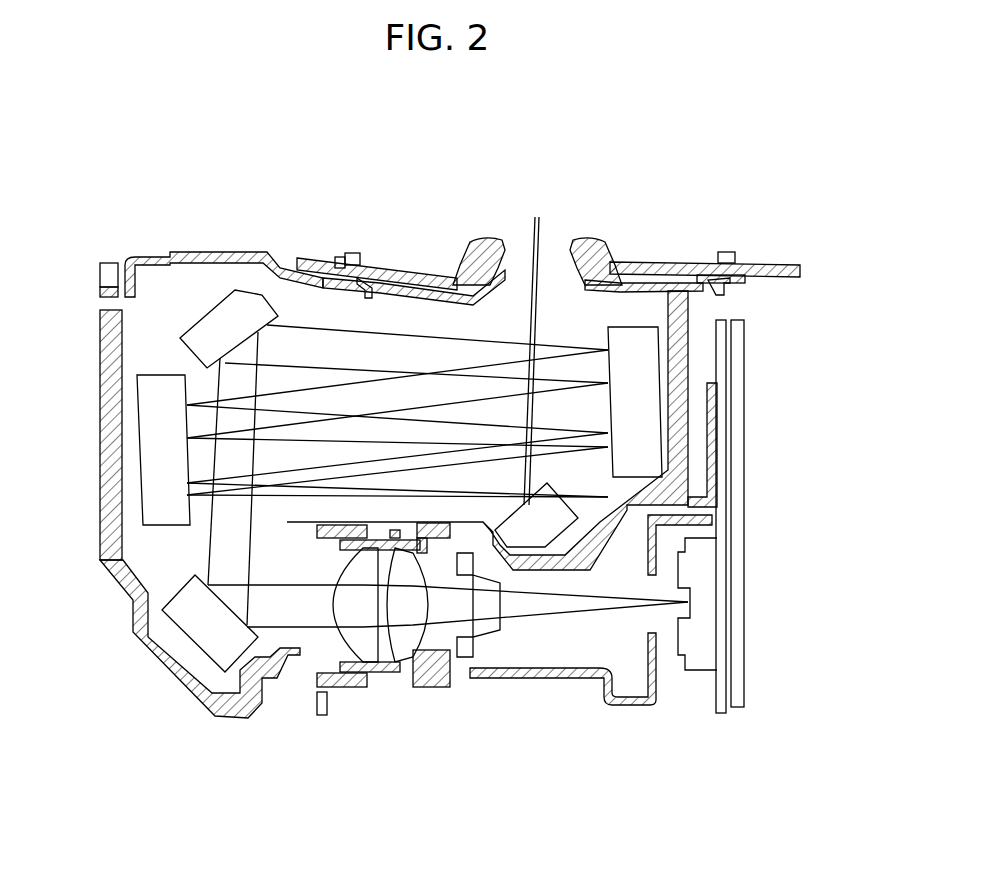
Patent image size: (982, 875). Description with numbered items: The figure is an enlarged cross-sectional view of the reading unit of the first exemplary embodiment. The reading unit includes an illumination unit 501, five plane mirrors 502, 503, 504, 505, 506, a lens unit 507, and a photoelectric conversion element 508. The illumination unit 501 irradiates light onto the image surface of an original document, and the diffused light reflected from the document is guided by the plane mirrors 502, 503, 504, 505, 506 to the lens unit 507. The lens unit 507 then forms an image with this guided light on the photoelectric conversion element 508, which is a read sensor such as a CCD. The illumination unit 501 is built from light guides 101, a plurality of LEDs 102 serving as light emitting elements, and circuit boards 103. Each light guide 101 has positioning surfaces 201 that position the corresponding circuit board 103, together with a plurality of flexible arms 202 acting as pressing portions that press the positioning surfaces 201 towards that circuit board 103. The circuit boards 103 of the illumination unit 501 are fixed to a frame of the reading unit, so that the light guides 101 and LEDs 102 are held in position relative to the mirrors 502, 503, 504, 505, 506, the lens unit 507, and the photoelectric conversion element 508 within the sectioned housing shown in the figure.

The light guide 101 is at (495, 255).
The LED 102 is at (352, 253).
The circuit board 103 is at (300, 262).
The positioning surface 201 is at (340, 258).
The flexible arm 202 is at (368, 292).
The illumination unit 501 is at (435, 230).
The plane mirror 502 is at (543, 525).
The plane mirror 503 is at (155, 410).
The plane mirror 504 is at (640, 380).
The plane mirror 505 is at (220, 322).
The plane mirror 506 is at (200, 627).
The lens unit 507 is at (350, 655).
The photoelectric conversion element 508 is at (697, 655).